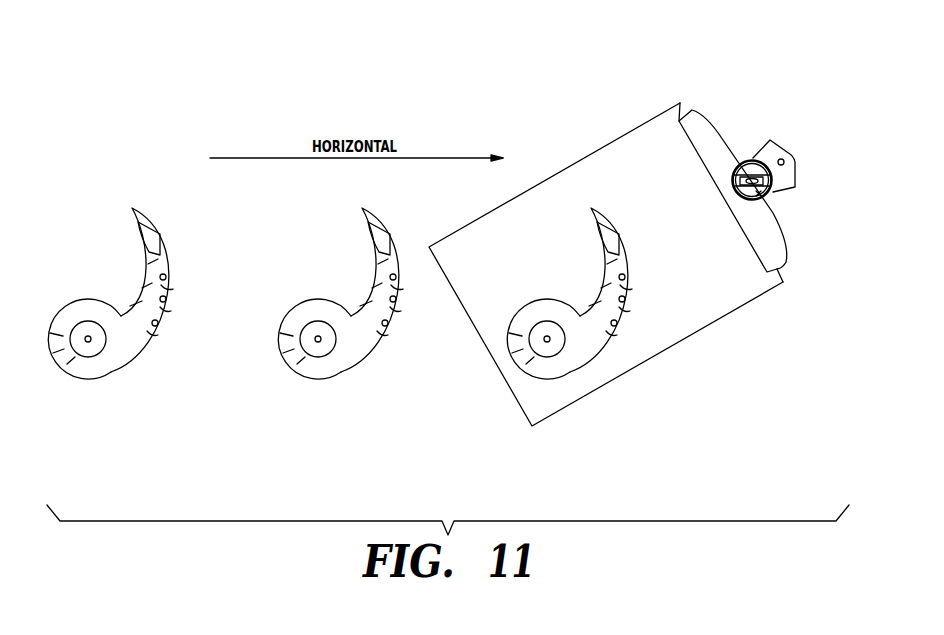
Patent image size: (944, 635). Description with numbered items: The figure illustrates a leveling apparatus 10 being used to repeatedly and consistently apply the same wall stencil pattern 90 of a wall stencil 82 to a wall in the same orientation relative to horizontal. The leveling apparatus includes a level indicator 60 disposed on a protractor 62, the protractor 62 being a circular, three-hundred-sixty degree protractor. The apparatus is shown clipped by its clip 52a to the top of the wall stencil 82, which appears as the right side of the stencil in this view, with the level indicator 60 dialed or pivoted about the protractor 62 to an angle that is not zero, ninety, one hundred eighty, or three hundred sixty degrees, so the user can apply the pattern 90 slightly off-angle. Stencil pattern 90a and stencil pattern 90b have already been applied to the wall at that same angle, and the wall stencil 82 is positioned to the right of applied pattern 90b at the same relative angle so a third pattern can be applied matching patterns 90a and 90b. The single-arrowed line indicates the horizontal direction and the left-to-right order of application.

The fastening assembly 10 is at (649, 263).
The mounting plate 52a is at (722, 140).
The level indicator 60 is at (768, 162).
The protractor 62 is at (757, 198).
The wall stencil 82 is at (658, 343).
The wall stencil pattern 90 is at (569, 365).
The stencil pattern 90a is at (110, 365).
The stencil pattern 90b is at (340, 365).